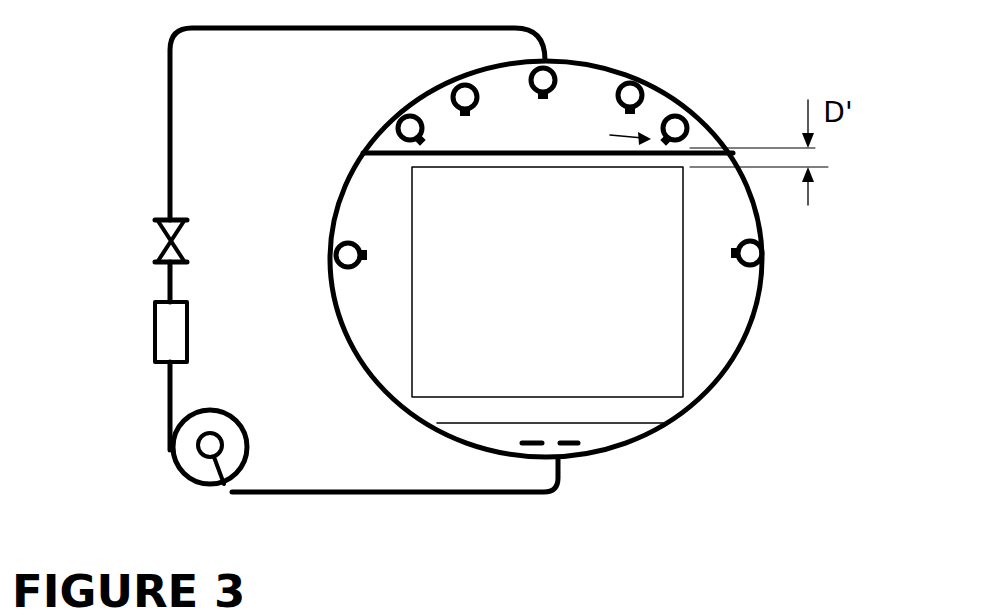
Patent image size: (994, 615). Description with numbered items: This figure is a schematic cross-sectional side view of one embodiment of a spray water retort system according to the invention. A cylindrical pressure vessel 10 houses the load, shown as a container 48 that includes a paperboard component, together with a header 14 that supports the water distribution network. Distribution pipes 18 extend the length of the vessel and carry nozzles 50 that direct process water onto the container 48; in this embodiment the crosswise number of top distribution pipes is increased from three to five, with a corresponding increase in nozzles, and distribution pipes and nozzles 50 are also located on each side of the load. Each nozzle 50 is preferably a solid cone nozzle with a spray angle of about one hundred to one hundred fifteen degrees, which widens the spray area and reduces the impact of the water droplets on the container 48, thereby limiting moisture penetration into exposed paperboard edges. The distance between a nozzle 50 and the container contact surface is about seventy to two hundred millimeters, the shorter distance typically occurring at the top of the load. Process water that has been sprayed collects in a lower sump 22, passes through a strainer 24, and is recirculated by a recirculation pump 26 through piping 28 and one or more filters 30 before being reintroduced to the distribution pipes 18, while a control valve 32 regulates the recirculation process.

The pressure vessel 10 is at (382, 129).
The header 14 is at (720, 150).
The distribution pipes 18 is at (638, 84).
The lower sump 22 is at (588, 425).
The strainer 24 is at (578, 447).
The recirculation pump 26 is at (170, 455).
The piping 28 is at (378, 494).
The filter 30 is at (155, 314).
The control valve 32 is at (158, 223).
The container 48 is at (683, 330).
The nozzle 50 is at (590, 97).